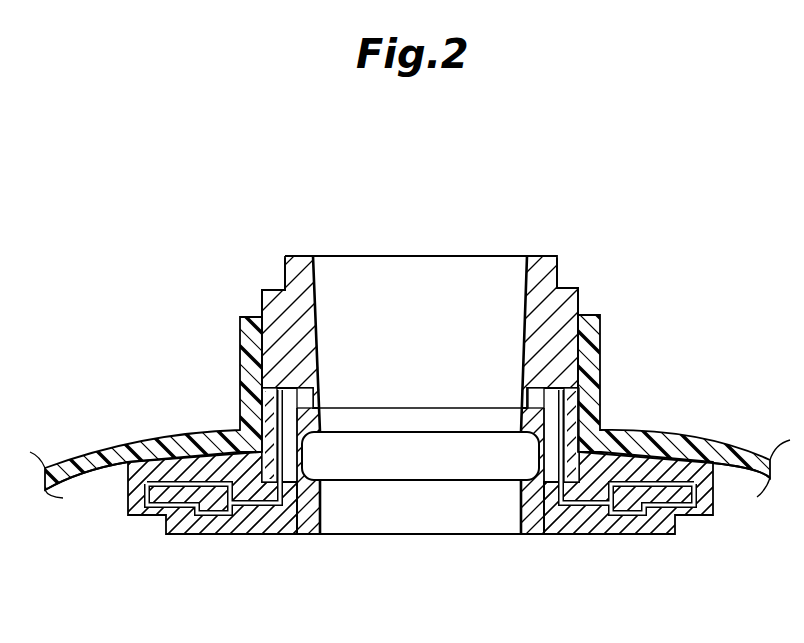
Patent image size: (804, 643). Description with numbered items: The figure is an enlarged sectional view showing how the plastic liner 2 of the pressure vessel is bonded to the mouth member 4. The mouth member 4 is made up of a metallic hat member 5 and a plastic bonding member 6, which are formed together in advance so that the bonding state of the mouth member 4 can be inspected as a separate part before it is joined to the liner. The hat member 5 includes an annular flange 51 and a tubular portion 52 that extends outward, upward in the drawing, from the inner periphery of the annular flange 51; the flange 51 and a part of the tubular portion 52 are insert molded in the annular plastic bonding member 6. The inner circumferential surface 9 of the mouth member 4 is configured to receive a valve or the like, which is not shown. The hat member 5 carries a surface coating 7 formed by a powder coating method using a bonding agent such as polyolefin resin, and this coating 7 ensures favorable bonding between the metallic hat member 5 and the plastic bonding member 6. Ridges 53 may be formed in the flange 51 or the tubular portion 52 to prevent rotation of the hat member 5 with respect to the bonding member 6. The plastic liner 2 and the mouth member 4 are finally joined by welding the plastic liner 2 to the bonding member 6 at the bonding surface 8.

The plastic liner 2 is at (402, 436).
The mouth member 4 is at (410, 354).
The metallic hat member 5 is at (273, 302).
The plastic bonding member 6 is at (293, 535).
The surface coating 7 is at (245, 535).
The bonding surface 8 is at (730, 475).
The inner circumferential surface 9 is at (318, 295).
The annular flange 51 is at (143, 515).
The tubular portion 52 is at (308, 352).
The ridges 53 is at (665, 478).